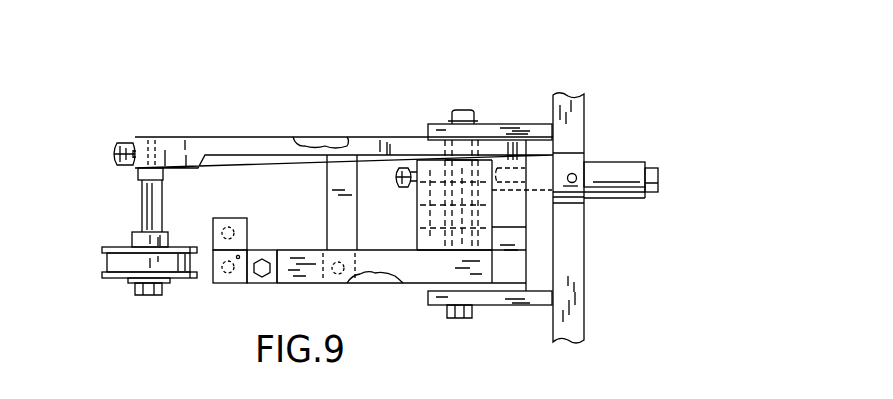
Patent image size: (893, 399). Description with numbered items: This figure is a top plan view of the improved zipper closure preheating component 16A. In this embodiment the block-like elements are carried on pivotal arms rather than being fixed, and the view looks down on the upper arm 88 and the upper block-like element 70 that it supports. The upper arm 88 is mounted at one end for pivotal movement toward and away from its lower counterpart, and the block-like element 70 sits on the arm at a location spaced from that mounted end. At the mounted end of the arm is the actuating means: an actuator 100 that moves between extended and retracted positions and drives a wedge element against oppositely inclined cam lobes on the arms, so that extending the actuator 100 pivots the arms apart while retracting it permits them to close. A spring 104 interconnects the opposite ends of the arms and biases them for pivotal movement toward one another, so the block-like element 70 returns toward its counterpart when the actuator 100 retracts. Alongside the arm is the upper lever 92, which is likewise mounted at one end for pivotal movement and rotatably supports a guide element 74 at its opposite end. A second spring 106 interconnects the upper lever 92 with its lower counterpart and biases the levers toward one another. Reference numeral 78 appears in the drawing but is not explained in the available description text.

The preheating component 16A is at (500, 62).
The upper block-like element 70 is at (248, 233).
The guide element 74 is at (118, 280).
The roller flange 78 is at (108, 262).
The upper arm 88 is at (310, 278).
The upper lever 92 is at (215, 143).
The actuator 100 is at (607, 173).
The spring 104 is at (400, 167).
The spring 106 is at (125, 142).